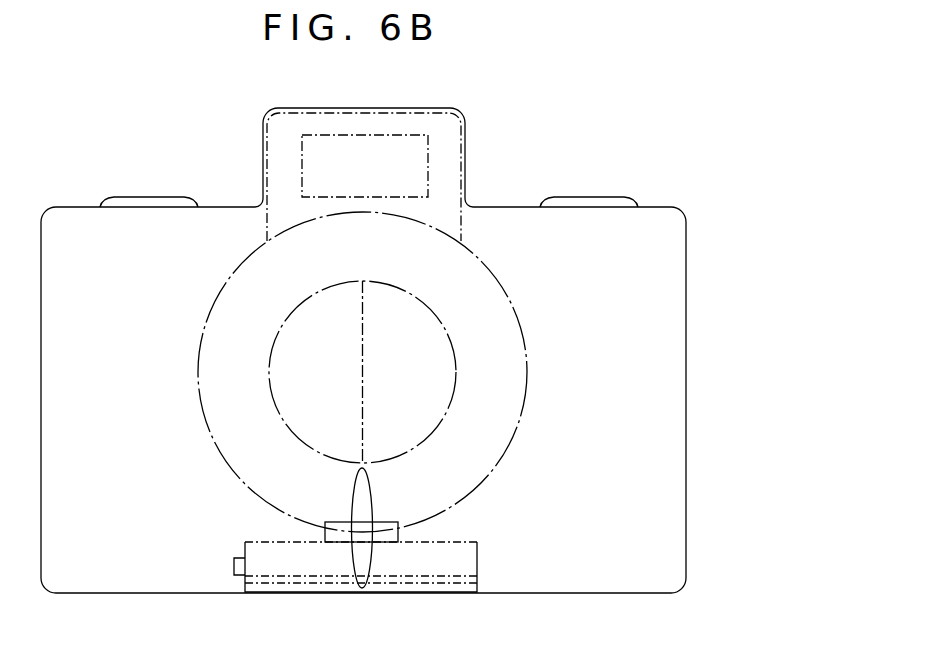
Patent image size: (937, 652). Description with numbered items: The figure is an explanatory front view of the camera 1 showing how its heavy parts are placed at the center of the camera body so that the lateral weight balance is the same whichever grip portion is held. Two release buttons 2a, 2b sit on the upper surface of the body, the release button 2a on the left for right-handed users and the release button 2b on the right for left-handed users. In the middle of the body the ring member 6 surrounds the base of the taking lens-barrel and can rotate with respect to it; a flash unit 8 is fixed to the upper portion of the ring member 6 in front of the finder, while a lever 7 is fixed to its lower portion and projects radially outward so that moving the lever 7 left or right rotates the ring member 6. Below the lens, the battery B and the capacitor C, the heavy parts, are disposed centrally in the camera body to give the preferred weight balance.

The camera 1 is at (393, 108).
The flash unit 8 is at (415, 172).
The release button 2a is at (140, 197).
The release button 2b is at (601, 198).
The ring member 6 is at (510, 403).
The lever 7 is at (367, 490).
The capacitor C is at (386, 525).
The battery B is at (470, 565).